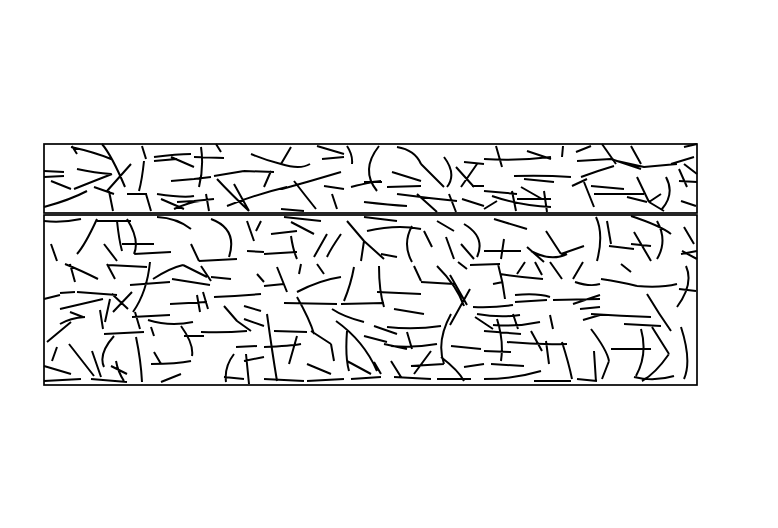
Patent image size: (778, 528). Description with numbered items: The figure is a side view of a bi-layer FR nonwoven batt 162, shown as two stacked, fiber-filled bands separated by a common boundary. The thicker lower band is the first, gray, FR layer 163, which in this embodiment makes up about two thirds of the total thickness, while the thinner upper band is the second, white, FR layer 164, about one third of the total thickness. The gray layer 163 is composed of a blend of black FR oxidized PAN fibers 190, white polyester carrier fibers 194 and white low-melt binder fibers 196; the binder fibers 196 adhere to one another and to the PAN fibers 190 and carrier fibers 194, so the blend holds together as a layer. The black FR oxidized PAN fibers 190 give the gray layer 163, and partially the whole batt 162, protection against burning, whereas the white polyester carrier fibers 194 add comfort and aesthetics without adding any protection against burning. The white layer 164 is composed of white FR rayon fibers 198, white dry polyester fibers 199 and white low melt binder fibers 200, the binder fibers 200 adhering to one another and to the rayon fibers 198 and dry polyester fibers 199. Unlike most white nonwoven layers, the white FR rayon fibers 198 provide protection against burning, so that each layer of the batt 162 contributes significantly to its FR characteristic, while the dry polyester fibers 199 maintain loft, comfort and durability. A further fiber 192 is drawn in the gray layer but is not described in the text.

The bi-layer FR nonwoven batt 162 is at (683, 72).
The first, gray, FR layer 163 is at (697, 302).
The second, white, FR layer 164 is at (697, 178).
The black FR oxidized PAN fibers 190 is at (617, 317).
The fiber 192 is at (483, 372).
The white polyester carrier fibers 194 is at (282, 372).
The white low-melt binder fibers 196 is at (140, 345).
The white FR rayon fibers 198 is at (623, 150).
The white dry polyester fibers 199 is at (147, 152).
The white low melt binder fibers 200 is at (378, 155).